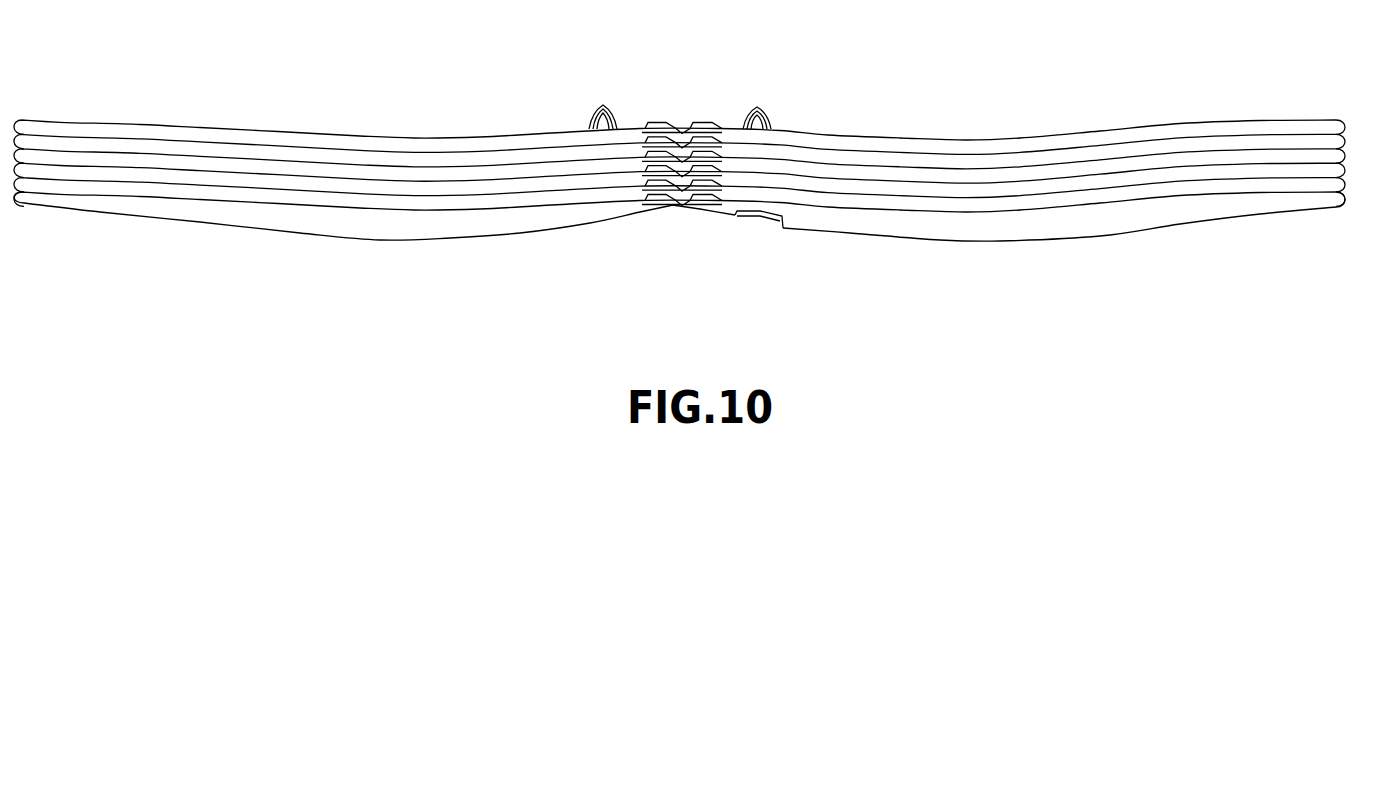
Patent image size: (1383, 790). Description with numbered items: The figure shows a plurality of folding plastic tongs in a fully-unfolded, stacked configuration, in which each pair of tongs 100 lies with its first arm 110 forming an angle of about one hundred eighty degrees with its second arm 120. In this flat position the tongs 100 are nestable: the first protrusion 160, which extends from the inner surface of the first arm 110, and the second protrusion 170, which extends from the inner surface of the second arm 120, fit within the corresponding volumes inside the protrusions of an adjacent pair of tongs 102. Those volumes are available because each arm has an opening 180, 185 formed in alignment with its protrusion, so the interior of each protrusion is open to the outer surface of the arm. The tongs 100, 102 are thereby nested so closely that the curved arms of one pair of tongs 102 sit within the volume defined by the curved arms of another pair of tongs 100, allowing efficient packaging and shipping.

The tongs 100 is at (698, 182).
The adjacent pair of tongs 102 is at (1046, 140).
The first arm 110 is at (384, 241).
The second arm 120 is at (942, 243).
The first protrusion 160 is at (608, 120).
The second protrusion 170 is at (766, 112).
The opening 180 is at (593, 224).
The opening 185 is at (760, 222).